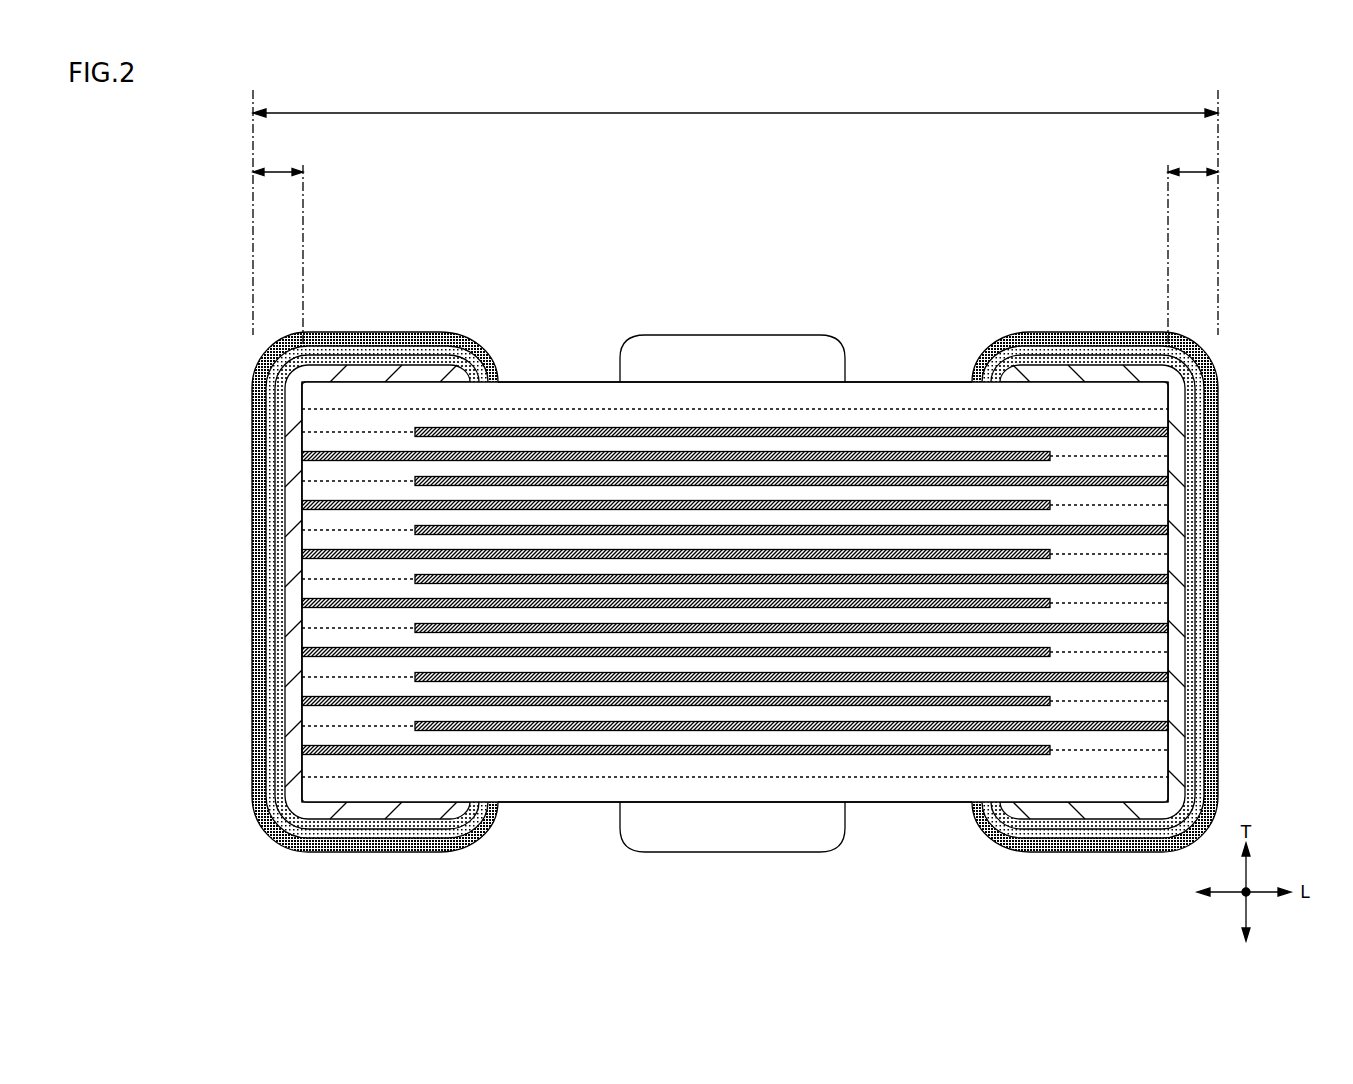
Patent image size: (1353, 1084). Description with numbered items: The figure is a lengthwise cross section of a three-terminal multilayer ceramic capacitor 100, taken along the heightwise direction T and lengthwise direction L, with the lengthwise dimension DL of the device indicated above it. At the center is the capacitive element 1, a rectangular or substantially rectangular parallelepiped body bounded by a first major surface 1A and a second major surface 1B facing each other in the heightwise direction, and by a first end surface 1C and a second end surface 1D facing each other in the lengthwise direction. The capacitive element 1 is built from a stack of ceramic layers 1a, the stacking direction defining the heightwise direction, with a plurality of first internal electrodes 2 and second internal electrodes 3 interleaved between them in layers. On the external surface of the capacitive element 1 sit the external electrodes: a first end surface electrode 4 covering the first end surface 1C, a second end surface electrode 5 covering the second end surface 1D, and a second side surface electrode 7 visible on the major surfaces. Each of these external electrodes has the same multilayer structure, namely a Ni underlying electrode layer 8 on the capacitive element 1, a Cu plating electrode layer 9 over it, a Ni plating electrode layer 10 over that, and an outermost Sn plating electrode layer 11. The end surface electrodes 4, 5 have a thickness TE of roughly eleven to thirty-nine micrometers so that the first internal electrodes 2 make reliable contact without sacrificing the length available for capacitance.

The three-terminal multilayer ceramic capacitor 100 is at (199, 116).
The capacitive element 1 is at (1290, 386).
The ceramic layers 1a is at (1168, 396).
The first major surface 1A is at (886, 816).
The second major surface 1B is at (893, 370).
The first end surface 1C is at (234, 404).
The second end surface 1D is at (1240, 384).
The first internal electrodes 2 is at (302, 456).
The second internal electrodes 3 is at (415, 432).
The first end surface electrode 4 is at (442, 238).
The second end surface electrode 5 is at (1150, 238).
The second side surface electrode 7 is at (727, 355).
The Ni underlying electrode layer 8 is at (337, 374).
The Cu plating electrode layer 9 is at (358, 360).
The Ni plating electrode layer 10 is at (380, 352).
The Sn plating electrode layer 11 is at (412, 340).